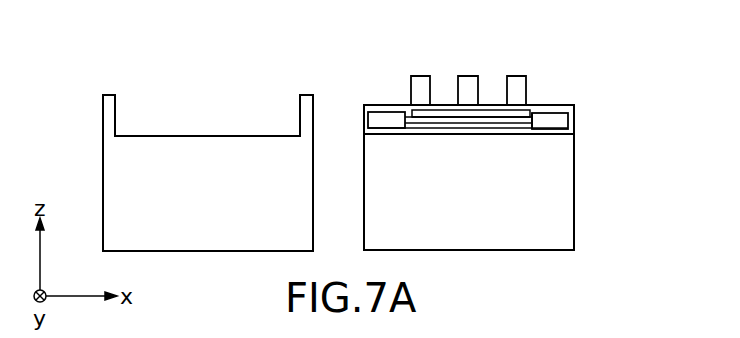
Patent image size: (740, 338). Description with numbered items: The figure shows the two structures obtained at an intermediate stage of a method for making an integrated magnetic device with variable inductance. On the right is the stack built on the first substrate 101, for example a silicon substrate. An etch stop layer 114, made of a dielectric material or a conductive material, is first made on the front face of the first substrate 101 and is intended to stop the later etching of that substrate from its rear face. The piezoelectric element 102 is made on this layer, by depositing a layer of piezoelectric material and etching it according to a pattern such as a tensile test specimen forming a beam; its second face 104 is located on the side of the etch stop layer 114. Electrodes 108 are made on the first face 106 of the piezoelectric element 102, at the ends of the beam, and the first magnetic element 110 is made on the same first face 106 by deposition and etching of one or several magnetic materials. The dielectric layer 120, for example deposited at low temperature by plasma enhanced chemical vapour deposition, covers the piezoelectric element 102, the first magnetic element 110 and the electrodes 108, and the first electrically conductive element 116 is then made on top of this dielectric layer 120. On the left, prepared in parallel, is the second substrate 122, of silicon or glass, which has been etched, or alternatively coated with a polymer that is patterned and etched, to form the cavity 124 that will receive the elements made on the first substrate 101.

The first substrate 101 is at (563, 234).
The piezoelectric element 102 is at (515, 123).
The second face 104 is at (457, 142).
The first face 106 is at (441, 108).
The electrodes 108 is at (378, 118).
The first magnetic element 110 is at (492, 113).
The etch stop layer 114 is at (573, 132).
The first electrically conductive element 116 is at (468, 83).
The dielectric layer 120 is at (530, 110).
The second substrate 122 is at (106, 182).
The cavity 124 is at (198, 118).